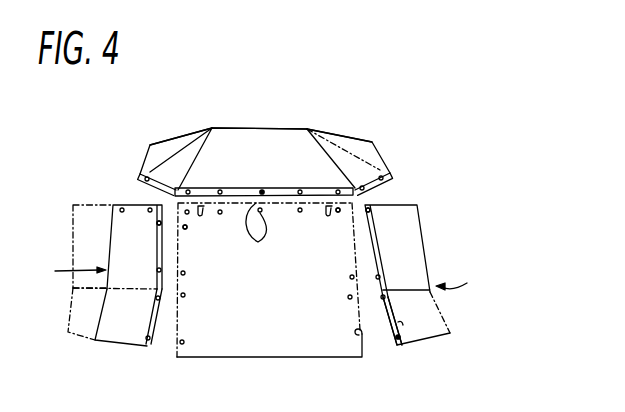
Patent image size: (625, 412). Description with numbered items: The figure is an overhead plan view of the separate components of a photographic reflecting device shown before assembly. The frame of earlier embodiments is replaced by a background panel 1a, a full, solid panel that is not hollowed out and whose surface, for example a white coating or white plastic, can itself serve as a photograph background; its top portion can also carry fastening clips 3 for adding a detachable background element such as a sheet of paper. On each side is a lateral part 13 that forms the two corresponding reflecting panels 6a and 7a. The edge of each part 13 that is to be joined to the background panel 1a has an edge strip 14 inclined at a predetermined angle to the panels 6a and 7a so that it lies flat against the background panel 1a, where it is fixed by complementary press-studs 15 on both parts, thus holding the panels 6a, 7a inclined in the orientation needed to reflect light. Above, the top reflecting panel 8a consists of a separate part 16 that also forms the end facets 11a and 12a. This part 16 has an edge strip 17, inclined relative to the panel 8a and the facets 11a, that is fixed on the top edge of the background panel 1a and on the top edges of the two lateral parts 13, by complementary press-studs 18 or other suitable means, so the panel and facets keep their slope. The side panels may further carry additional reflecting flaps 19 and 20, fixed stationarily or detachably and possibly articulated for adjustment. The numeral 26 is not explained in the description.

The background panel 1a is at (293, 318).
The fastening clips 3 is at (200, 212).
The side reflecting panel 6a is at (117, 233).
The side reflecting panel 7a is at (113, 328).
The top reflecting panel 8a is at (225, 136).
The end facet 11a is at (173, 167).
The end facet 12a is at (171, 140).
The lateral part 13 is at (251, 273).
The edge strip 14 is at (402, 323).
The press-studs 15 is at (160, 224).
The top part 16 is at (317, 104).
The edge strip 17 is at (293, 168).
The press-studs 18 is at (258, 234).
The additional reflecting flap 19 is at (96, 210).
The additional reflecting flap 20 is at (77, 313).
The corner holes 26 is at (180, 343).